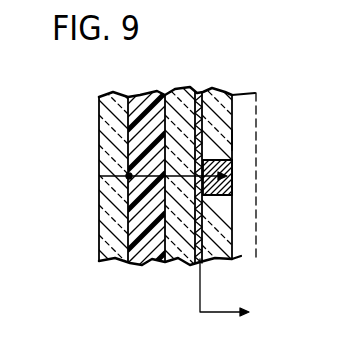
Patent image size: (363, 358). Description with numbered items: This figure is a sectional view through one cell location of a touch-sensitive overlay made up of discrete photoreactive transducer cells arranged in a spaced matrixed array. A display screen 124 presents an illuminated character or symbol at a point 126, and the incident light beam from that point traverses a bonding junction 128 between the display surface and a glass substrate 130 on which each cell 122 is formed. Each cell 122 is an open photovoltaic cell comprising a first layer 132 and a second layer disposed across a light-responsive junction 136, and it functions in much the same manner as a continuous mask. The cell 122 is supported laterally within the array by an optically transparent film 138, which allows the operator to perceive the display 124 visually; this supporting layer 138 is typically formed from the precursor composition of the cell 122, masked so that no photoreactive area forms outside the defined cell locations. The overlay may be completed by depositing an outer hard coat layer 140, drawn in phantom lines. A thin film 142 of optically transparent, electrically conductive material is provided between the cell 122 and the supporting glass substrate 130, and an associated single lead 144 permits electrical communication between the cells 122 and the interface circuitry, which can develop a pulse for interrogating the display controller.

The photoreactive transducer cell 122 is at (240, 190).
The display screen 124 is at (100, 220).
The point 126 is at (100, 176).
The bonding junction 128 is at (143, 100).
The glass substrate 130 is at (181, 90).
The first layer 132 is at (236, 139).
The light-responsive junction 136 is at (233, 160).
The optically transparent film 138 is at (218, 92).
The outer hard coat layer 140 is at (246, 243).
The thin film 142 is at (199, 92).
The single lead 144 is at (200, 292).